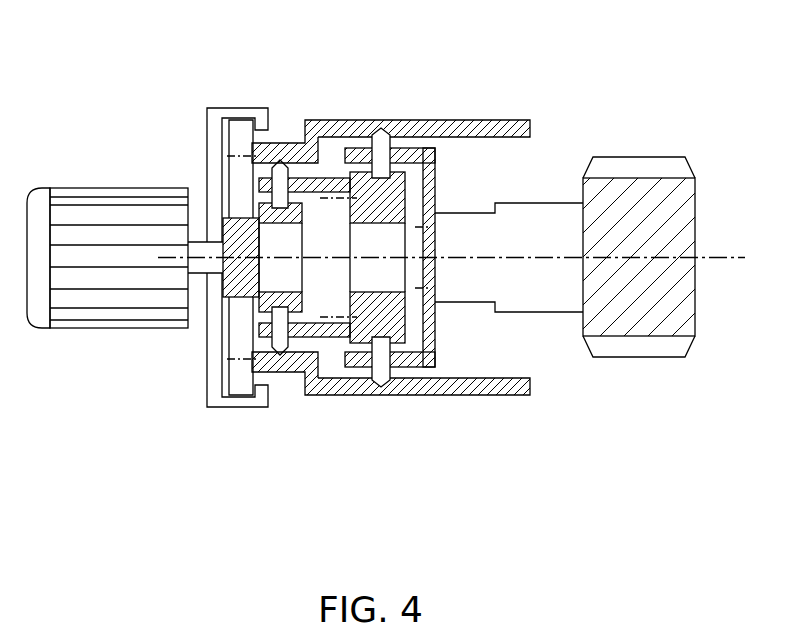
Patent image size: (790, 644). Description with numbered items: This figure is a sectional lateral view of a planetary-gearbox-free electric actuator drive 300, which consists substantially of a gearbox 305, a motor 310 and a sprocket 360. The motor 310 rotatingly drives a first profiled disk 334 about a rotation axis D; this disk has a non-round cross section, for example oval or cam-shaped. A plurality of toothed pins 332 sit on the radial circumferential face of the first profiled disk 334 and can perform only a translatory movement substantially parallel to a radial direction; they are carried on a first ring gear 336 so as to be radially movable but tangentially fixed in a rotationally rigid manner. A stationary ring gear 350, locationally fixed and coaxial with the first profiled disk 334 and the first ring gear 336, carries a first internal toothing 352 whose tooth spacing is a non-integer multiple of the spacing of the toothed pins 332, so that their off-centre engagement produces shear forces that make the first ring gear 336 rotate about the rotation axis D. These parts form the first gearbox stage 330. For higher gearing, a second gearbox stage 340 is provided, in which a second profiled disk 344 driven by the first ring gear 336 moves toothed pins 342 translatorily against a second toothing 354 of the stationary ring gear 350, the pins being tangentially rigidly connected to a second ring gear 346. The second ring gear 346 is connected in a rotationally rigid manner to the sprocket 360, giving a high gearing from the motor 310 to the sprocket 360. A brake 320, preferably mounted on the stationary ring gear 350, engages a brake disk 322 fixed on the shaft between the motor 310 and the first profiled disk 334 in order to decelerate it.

The planetary-gearbox-free electric actuator drive 300 is at (108, 57).
The gearbox 305 is at (518, 428).
The motor 310 is at (92, 298).
The brake 320 is at (207, 137).
The brake disk 322 is at (240, 352).
The first gearbox stage 330 is at (300, 355).
The toothed pins 332 is at (300, 156).
The first profiled disk 334 is at (258, 296).
The first ring gear 336 is at (328, 186).
The second gearbox stage 340 is at (417, 377).
The toothed pins 342 is at (377, 172).
The second profiled disk 344 is at (353, 343).
The second ring gear 346 is at (430, 148).
The stationary ring gear 350 is at (503, 120).
The first internal toothing 352 is at (275, 170).
The second toothing 354 is at (378, 150).
The sprocket 360 is at (625, 190).
The rotation axis D is at (717, 257).